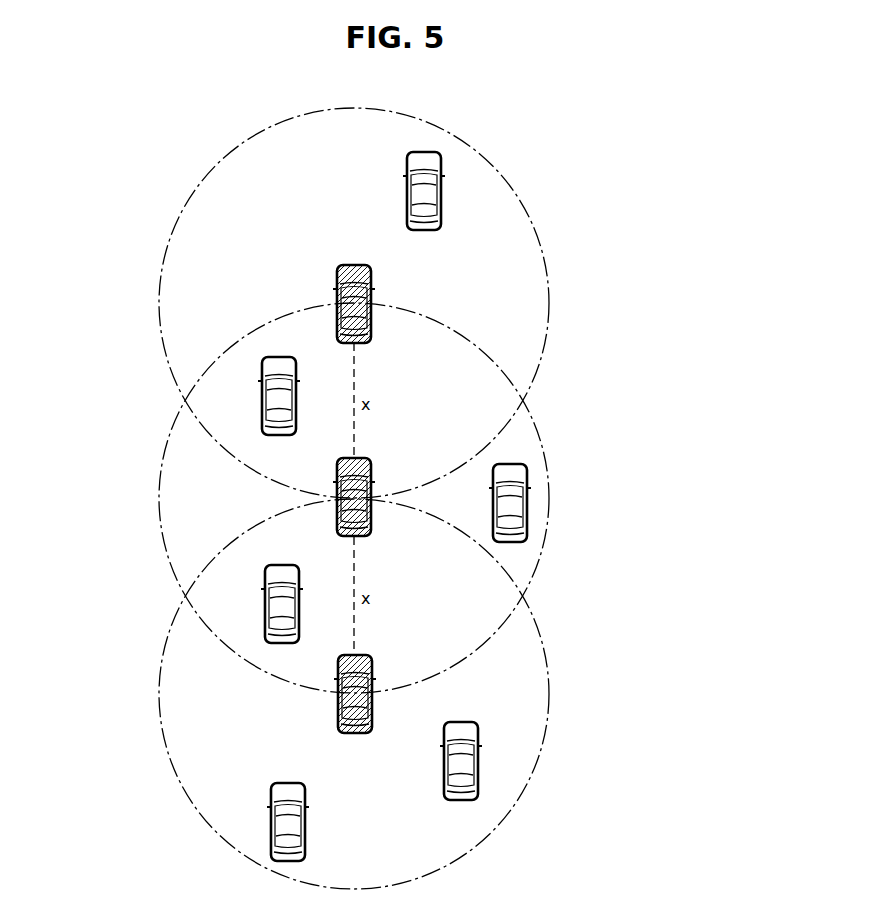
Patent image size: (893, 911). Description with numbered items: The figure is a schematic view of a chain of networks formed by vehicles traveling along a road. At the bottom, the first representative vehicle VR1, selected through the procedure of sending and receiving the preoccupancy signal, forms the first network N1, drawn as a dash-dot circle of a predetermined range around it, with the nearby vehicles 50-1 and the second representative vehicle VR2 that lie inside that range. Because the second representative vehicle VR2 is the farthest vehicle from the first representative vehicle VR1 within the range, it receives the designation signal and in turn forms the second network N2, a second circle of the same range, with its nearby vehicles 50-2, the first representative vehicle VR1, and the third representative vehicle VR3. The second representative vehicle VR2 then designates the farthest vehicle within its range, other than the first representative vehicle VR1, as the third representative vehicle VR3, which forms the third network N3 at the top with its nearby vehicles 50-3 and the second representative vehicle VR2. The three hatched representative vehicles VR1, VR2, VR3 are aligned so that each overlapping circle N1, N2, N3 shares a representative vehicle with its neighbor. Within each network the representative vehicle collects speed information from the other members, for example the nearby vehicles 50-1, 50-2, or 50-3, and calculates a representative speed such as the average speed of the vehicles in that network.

The nearby vehicles 50-1 is at (455, 765).
The nearby vehicles 50-2 is at (285, 388).
The nearby vehicles 50-3 is at (412, 195).
The first network N1 is at (549, 683).
The second network N2 is at (550, 487).
The third network N3 is at (549, 291).
The first representative vehicle VR1 is at (372, 720).
The second representative vehicle VR2 is at (371, 524).
The third representative vehicle VR3 is at (371, 331).